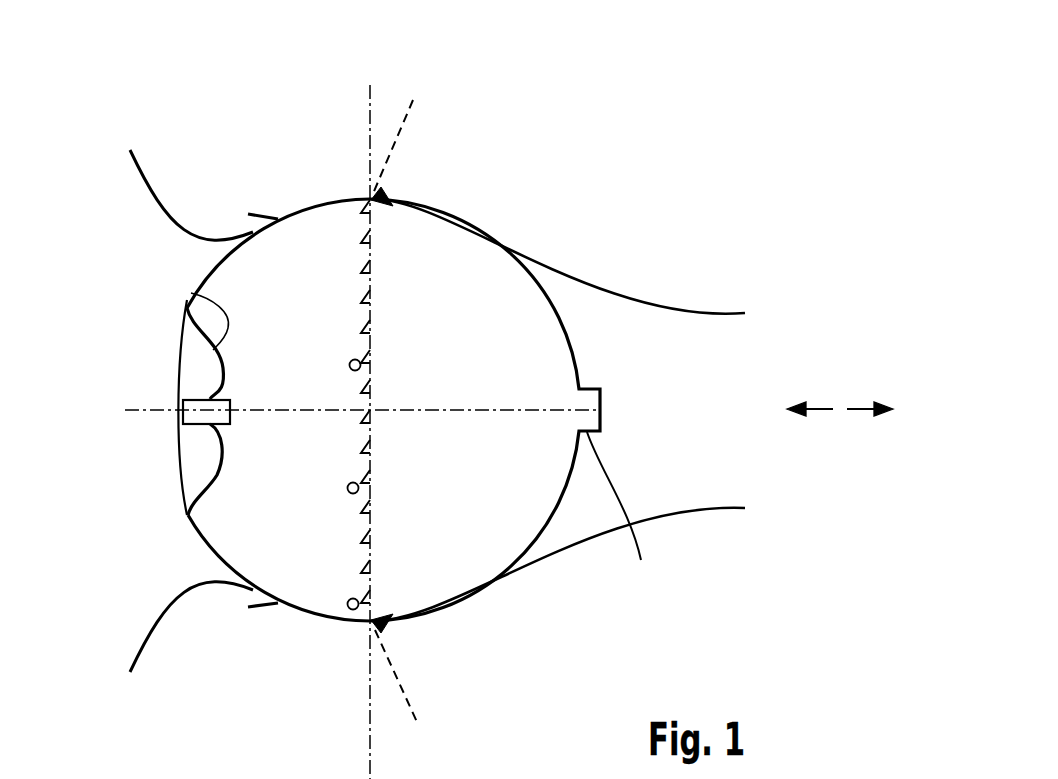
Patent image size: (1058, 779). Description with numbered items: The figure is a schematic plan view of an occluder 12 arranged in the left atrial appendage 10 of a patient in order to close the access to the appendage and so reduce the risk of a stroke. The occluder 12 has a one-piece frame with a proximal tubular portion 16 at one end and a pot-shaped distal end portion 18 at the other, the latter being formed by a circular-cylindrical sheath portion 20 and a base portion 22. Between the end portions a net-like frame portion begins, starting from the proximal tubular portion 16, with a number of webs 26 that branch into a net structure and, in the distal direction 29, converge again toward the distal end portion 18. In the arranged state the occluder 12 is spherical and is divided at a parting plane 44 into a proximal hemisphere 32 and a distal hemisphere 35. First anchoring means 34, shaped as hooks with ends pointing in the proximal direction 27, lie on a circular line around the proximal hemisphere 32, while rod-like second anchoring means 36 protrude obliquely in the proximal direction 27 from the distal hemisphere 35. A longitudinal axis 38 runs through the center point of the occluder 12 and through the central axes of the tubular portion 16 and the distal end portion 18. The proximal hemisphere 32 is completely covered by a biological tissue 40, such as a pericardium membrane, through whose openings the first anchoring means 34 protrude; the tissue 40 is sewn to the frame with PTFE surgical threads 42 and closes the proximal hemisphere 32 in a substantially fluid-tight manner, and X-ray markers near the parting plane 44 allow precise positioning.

The left atrial appendage 10 is at (702, 443).
The occluder 12 is at (305, 232).
The proximal tubular portion 16 is at (192, 413).
The pot-shaped distal end portion 18 is at (600, 403).
The circular-cylindrical sheath portion 20 is at (621, 511).
The base portion 22 is at (600, 400).
The webs 26 is at (227, 328).
The proximal direction 27 is at (817, 408).
The distal direction 29 is at (862, 411).
The proximal hemisphere 32 is at (208, 524).
The first anchoring means 34 is at (262, 212).
The distal hemisphere 35 is at (450, 577).
The second anchoring means 36 is at (392, 198).
The longitudinal axis 38 is at (127, 410).
The biological tissue 40 is at (178, 372).
The surgical threads 42 is at (372, 268).
The parting plane 44 is at (370, 95).